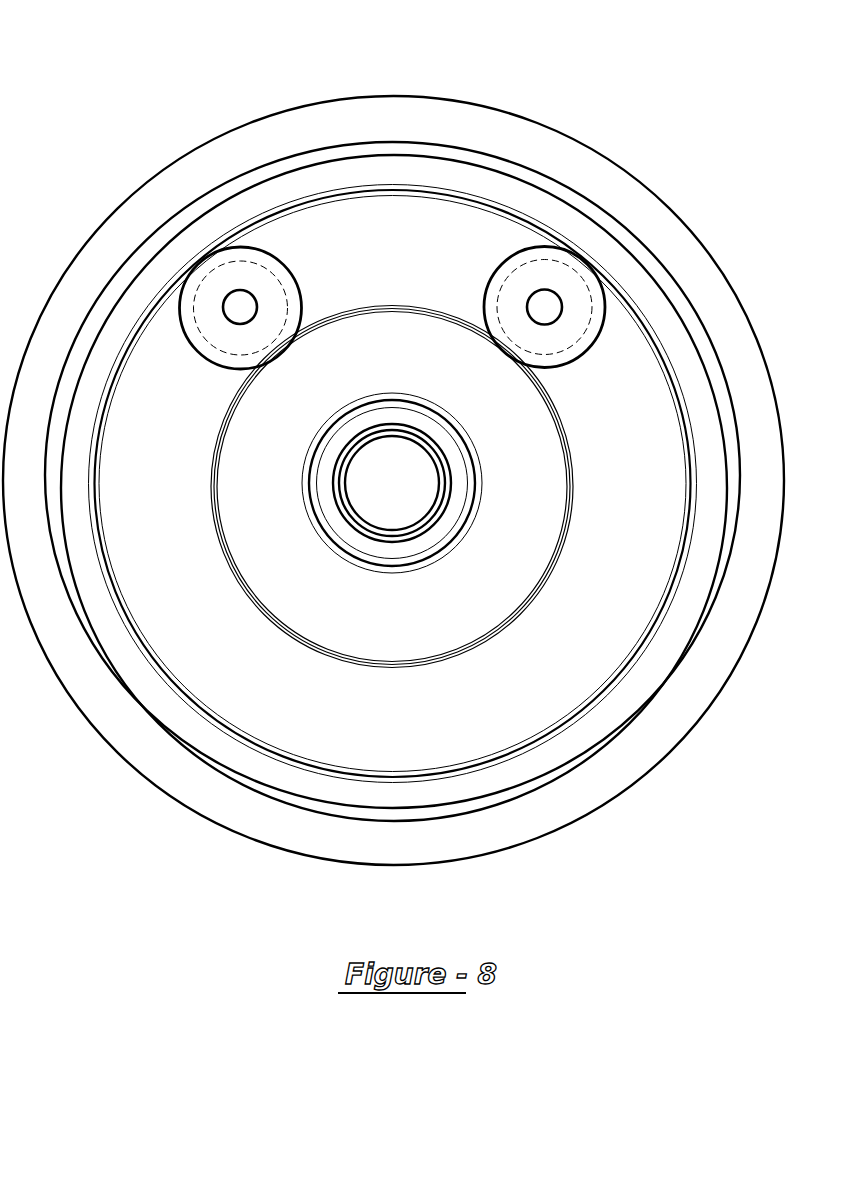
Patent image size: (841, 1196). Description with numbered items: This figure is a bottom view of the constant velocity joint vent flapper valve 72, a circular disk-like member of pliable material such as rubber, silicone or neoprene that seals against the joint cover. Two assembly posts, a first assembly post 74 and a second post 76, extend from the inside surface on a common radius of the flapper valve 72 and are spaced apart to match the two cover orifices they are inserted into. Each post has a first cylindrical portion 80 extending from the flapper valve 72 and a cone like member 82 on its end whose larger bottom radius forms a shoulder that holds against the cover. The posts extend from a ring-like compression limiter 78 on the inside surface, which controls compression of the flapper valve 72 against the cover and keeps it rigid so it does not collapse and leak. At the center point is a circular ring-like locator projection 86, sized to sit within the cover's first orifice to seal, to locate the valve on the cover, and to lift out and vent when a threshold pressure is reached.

The flapper valve 72 is at (266, 110).
The assembly post 74 is at (244, 308).
The second post 76 is at (545, 304).
The compression limiter 78 is at (262, 688).
The first cylindrical portion 80 is at (548, 262).
The cone like member 82 is at (225, 333).
The locator projection 86 is at (213, 270).